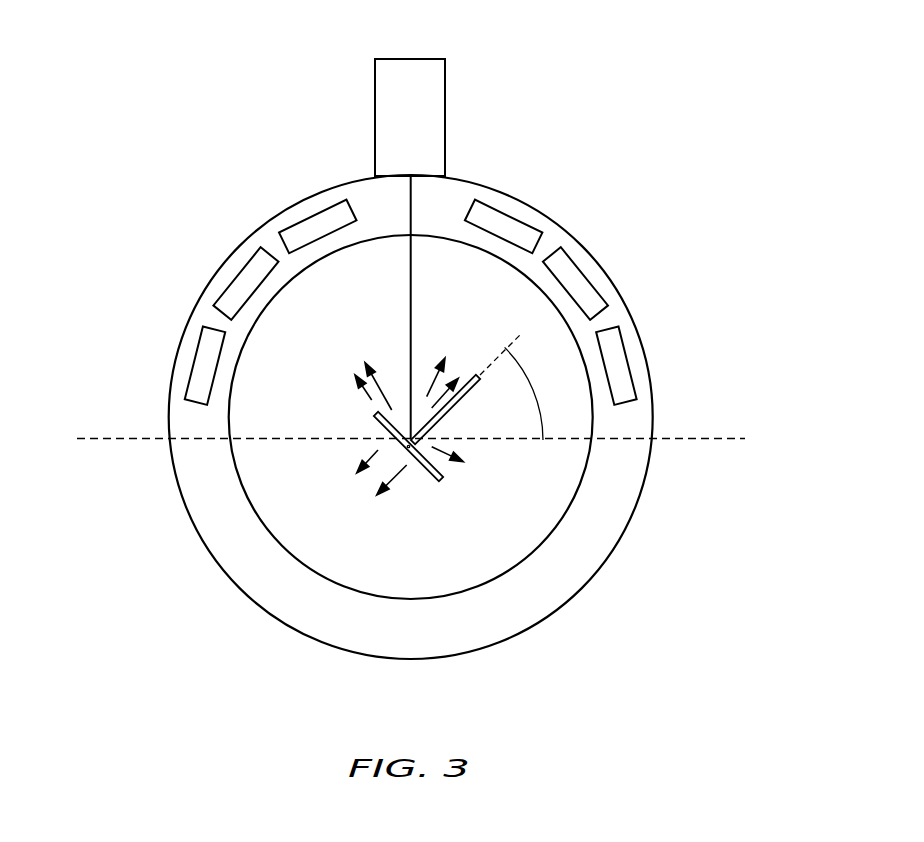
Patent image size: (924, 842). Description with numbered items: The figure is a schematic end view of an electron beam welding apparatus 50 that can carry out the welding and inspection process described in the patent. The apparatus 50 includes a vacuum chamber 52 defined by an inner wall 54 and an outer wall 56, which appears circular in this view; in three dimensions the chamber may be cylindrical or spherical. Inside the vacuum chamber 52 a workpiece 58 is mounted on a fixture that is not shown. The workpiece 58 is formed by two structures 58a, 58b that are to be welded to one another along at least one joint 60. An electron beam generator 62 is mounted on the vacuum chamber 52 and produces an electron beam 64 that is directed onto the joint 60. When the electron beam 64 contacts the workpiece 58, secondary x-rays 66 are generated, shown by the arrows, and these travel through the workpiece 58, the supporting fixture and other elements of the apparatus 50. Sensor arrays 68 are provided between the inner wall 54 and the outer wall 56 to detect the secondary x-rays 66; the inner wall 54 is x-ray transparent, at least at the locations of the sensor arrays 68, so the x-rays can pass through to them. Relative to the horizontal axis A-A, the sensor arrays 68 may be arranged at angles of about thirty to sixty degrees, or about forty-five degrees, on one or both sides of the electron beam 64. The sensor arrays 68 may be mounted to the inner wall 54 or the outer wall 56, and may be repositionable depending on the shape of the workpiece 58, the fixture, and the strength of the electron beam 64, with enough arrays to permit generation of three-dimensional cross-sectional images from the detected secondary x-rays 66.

The electron beam welding apparatus 50 is at (858, 105).
The vacuum chamber 52 is at (409, 413).
The inner wall 54 is at (553, 527).
The outer wall 56 is at (610, 552).
The workpiece 58 is at (394, 432).
The first structure 58a is at (422, 473).
The second structure 58b is at (463, 398).
The joint 60 is at (393, 439).
The electron beam generator 62 is at (425, 59).
The electron beam 64 is at (411, 290).
The secondary x-rays 66 is at (371, 384).
The sensor arrays 68 is at (312, 215).